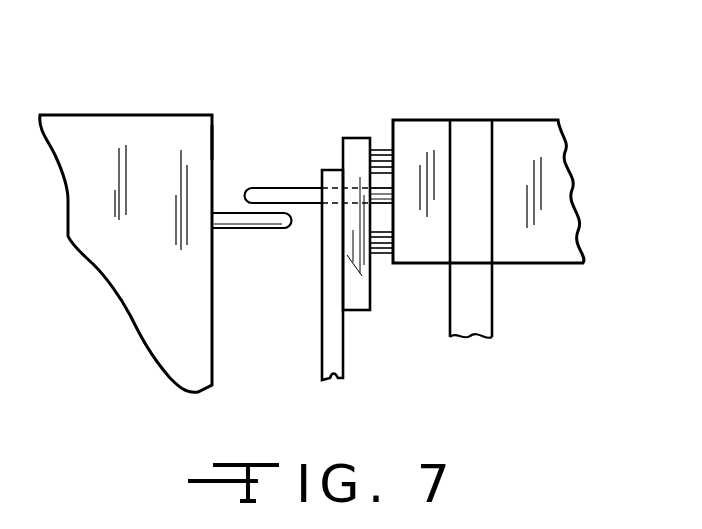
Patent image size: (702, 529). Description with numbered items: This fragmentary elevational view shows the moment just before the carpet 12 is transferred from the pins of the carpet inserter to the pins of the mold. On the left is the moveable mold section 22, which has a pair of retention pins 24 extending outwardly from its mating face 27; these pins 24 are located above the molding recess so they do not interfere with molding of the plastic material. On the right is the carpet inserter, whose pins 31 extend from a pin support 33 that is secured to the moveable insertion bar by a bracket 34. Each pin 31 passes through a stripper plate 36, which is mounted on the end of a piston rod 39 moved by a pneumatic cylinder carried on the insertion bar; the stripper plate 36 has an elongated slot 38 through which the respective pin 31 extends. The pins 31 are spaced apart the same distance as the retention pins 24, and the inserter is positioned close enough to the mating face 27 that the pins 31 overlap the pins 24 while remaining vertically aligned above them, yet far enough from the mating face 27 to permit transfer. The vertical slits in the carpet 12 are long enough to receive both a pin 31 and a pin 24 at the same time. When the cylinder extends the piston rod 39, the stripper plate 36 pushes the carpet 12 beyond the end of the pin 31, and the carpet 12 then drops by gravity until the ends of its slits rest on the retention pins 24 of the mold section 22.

The carpet 12 is at (333, 374).
The moveable mold section 22 is at (152, 277).
The retention pins 24 is at (250, 230).
The mating face 27 is at (213, 142).
The pins 31 is at (272, 186).
The pin support 33 is at (520, 133).
The bracket 34 is at (478, 317).
The stripper plate 36 is at (352, 137).
The elongated slot 38 is at (372, 282).
The piston rod 39 is at (377, 150).